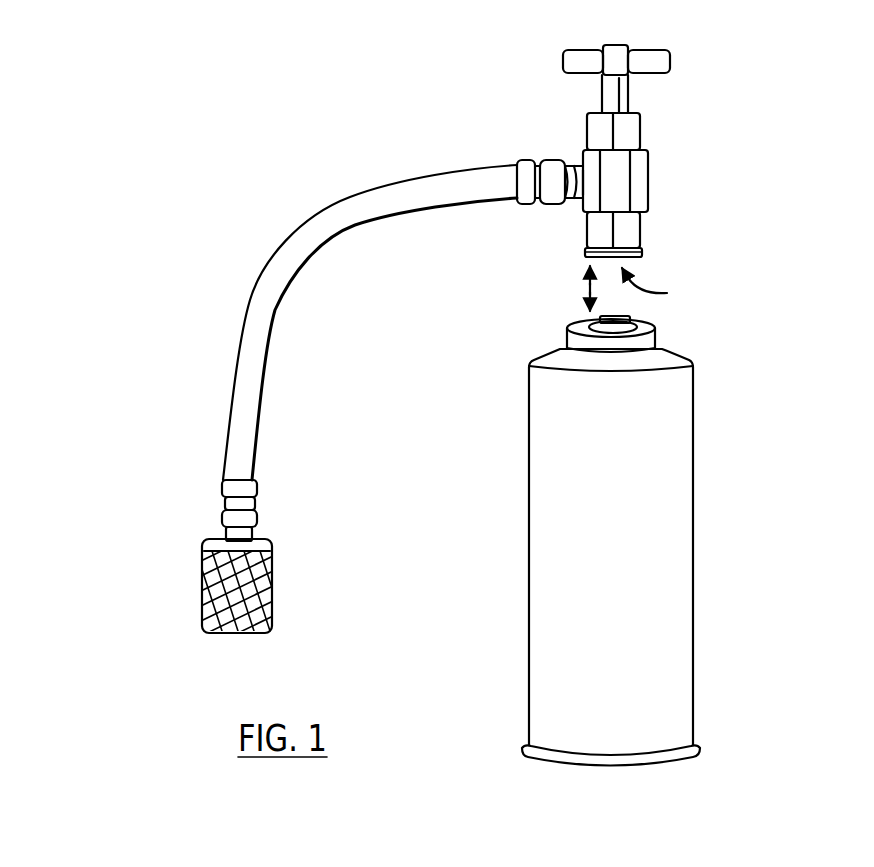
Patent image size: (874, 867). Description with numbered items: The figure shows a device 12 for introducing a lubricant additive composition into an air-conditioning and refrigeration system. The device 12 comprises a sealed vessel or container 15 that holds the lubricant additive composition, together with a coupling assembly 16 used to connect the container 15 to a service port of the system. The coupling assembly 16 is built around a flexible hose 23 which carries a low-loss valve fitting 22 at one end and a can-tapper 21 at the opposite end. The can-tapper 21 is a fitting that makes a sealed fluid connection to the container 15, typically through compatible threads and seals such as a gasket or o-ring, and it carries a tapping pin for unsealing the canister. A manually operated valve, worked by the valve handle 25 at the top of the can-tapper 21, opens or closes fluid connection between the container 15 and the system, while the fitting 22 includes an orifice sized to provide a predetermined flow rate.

The device 12 is at (740, 268).
The container 15 is at (693, 447).
The coupling assembly 16 is at (254, 223).
The can-tapper 21 is at (637, 183).
The low-loss valve fitting 22 is at (282, 586).
The flexible hose 23 is at (285, 318).
The valve handle 25 is at (645, 98).